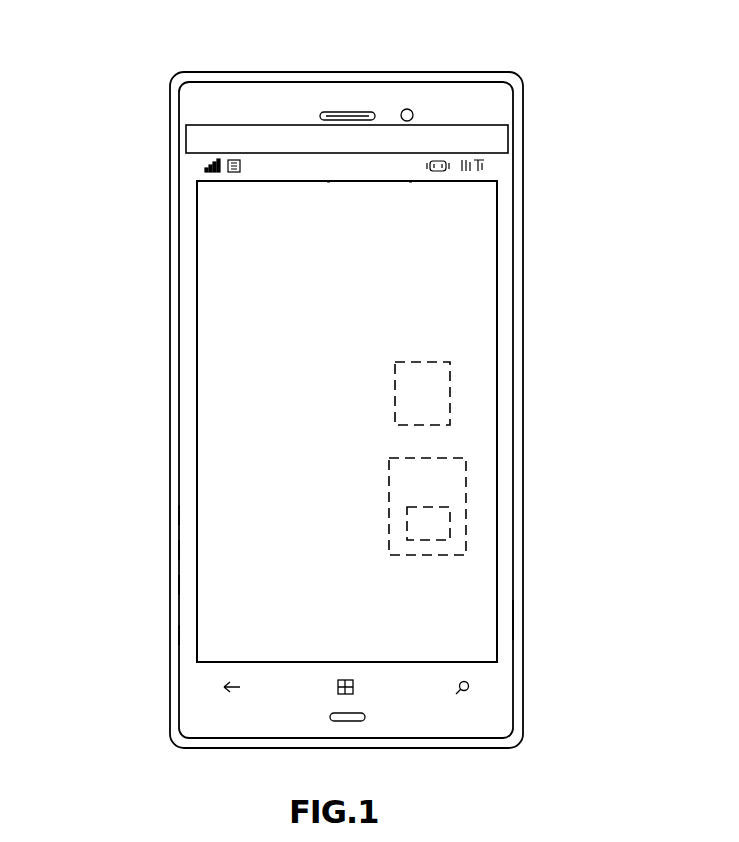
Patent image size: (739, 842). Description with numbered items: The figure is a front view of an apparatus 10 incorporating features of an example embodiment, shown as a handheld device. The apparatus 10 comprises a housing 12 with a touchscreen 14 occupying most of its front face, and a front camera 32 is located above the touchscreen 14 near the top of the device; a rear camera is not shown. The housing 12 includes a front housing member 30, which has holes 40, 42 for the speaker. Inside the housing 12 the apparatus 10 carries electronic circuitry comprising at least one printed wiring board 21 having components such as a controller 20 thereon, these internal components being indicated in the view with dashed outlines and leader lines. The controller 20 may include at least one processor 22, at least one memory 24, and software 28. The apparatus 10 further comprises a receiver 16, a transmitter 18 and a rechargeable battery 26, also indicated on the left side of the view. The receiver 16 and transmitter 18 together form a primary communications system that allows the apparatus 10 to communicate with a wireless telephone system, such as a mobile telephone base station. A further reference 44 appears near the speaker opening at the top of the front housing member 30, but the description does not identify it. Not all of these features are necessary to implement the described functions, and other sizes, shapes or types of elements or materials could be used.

The apparatus 10 is at (130, 128).
The housing 12 is at (172, 348).
The touchscreen 14 is at (232, 470).
The receiver 16 is at (171, 515).
The transmitter 18 is at (171, 550).
The controller 20 is at (171, 585).
The printed wiring board 21 is at (452, 440).
The processor 22 is at (452, 380).
The memory 24 is at (467, 487).
The rechargeable battery 26 is at (171, 635).
The software 28 is at (448, 527).
The front housing member 30 is at (507, 625).
The front camera 32 is at (412, 110).
The hole 40 is at (355, 722).
The hole 42 is at (331, 114).
The speaker grille 44 is at (348, 114).